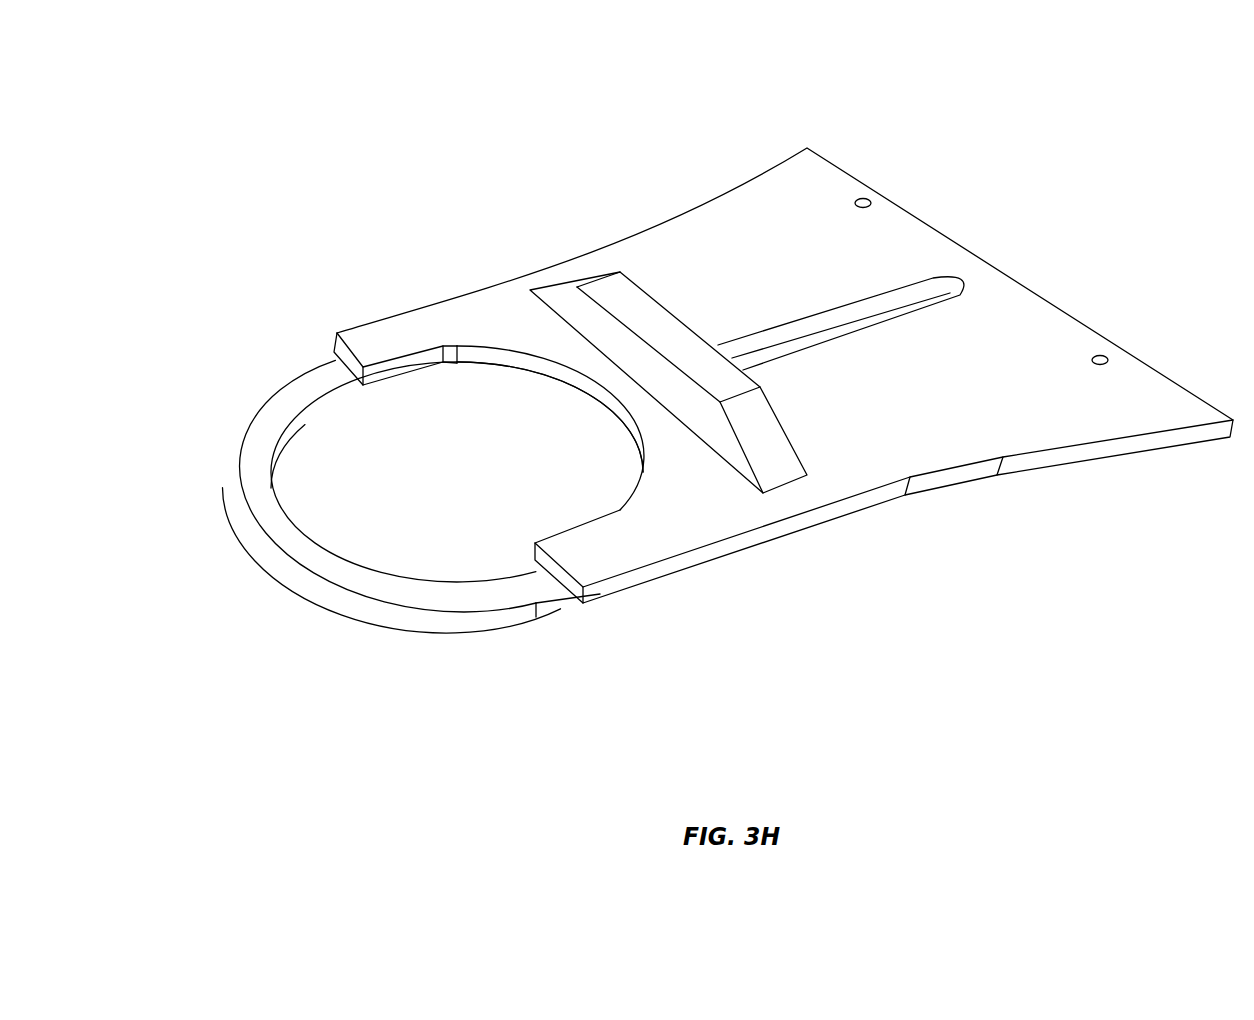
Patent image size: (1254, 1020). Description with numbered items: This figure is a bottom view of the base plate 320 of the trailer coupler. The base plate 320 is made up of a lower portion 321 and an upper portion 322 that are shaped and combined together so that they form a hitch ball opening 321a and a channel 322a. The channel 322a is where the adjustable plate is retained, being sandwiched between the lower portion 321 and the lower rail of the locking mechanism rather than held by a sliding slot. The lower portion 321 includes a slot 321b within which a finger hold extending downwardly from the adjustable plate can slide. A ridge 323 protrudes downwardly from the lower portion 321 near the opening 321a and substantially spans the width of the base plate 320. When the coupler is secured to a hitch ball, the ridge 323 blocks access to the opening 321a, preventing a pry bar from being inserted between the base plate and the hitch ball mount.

The base plate 320 is at (291, 687).
The lower portion 321 is at (607, 552).
The hitch ball opening 321a is at (590, 394).
The slot 321b is at (872, 305).
The upper portion 322 is at (467, 600).
The channel 322a is at (307, 410).
The ridge 323 is at (626, 287).